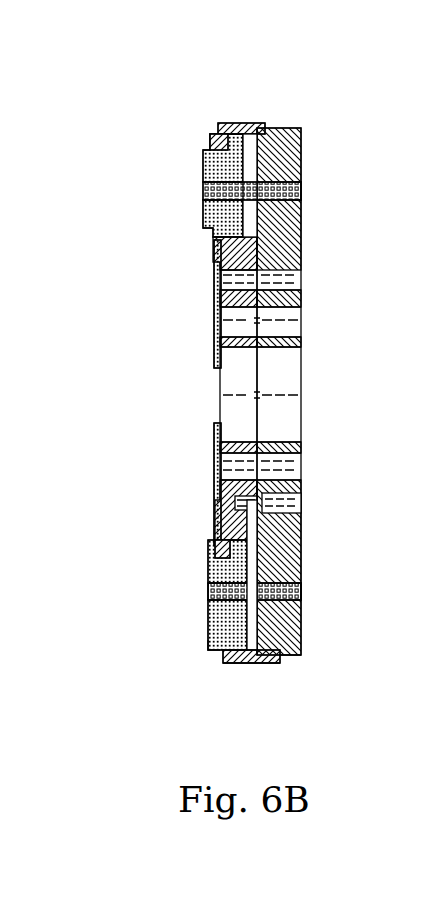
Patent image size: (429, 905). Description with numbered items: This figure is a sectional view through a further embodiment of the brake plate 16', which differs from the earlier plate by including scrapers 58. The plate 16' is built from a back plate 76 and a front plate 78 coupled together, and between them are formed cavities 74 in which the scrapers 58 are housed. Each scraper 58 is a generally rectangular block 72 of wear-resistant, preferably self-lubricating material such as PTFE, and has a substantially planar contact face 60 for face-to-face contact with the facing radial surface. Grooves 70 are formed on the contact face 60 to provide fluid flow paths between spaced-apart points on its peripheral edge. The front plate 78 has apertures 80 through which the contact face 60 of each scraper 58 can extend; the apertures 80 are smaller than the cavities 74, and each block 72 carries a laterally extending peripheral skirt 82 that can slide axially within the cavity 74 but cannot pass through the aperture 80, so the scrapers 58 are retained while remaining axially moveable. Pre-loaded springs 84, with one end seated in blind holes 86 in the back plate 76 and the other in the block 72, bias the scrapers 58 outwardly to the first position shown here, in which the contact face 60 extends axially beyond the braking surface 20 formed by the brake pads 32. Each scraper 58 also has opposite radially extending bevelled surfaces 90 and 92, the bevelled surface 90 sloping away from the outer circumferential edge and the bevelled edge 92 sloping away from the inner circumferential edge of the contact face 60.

The plate 16' is at (320, 391).
The braking surface 20 is at (212, 299).
The brake pads 32 is at (190, 333).
The scrapers 58 is at (250, 128).
The contact face 60 is at (200, 158).
The grooves 70 is at (202, 192).
The block 72 is at (205, 615).
The cavity 74 is at (301, 130).
The back plate 76 is at (288, 632).
The front plate 78 is at (265, 665).
The apertures 80 is at (216, 659).
The peripheral skirt 82 is at (216, 131).
The springs 84 is at (300, 175).
The blind holes 86 is at (205, 584).
The bevelled surface 90 is at (205, 551).
The bevelled edge 92 is at (205, 644).